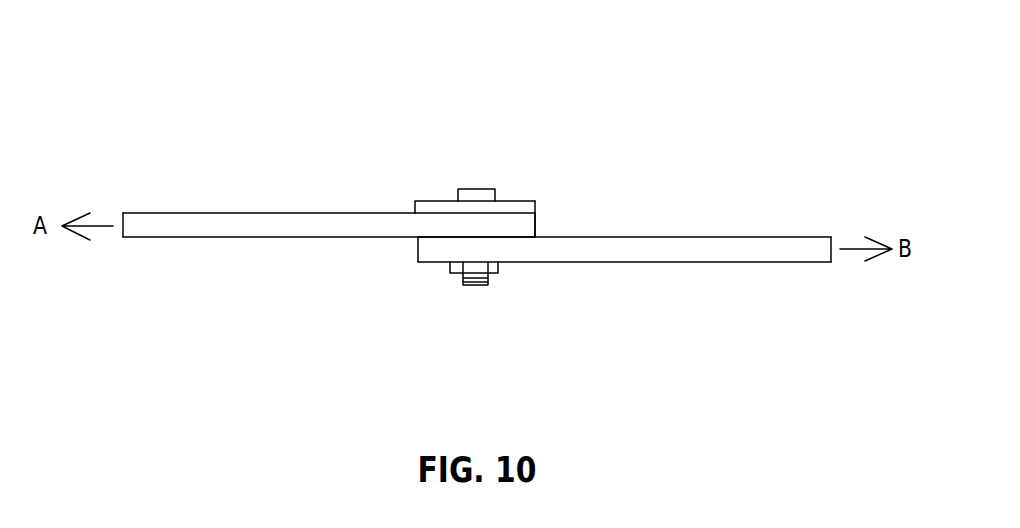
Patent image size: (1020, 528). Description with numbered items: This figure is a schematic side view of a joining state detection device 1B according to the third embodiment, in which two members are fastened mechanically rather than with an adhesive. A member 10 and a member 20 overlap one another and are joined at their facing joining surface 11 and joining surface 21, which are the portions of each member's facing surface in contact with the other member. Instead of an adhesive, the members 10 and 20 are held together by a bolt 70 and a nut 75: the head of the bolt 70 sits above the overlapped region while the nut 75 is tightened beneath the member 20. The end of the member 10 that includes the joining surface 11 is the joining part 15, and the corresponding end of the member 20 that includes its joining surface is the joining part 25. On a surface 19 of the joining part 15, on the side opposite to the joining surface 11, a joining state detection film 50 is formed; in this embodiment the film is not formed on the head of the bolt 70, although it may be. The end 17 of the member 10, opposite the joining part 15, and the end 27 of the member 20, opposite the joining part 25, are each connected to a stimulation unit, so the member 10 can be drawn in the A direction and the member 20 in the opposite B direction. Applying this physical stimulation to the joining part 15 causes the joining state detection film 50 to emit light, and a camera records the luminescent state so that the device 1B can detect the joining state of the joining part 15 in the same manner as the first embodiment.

The joining state detection device 1B is at (640, 118).
The member 10 is at (243, 212).
The joining surface 11 is at (527, 240).
The joining part 15 is at (441, 222).
The end 17 is at (147, 225).
The surface 19 is at (507, 212).
The member 20 is at (572, 248).
The joining surface 21 is at (485, 236).
The joining part 25 is at (433, 248).
The end 27 is at (808, 249).
The joining state detection film 50 is at (438, 200).
The bolt 70 is at (485, 188).
The nut 75 is at (452, 275).